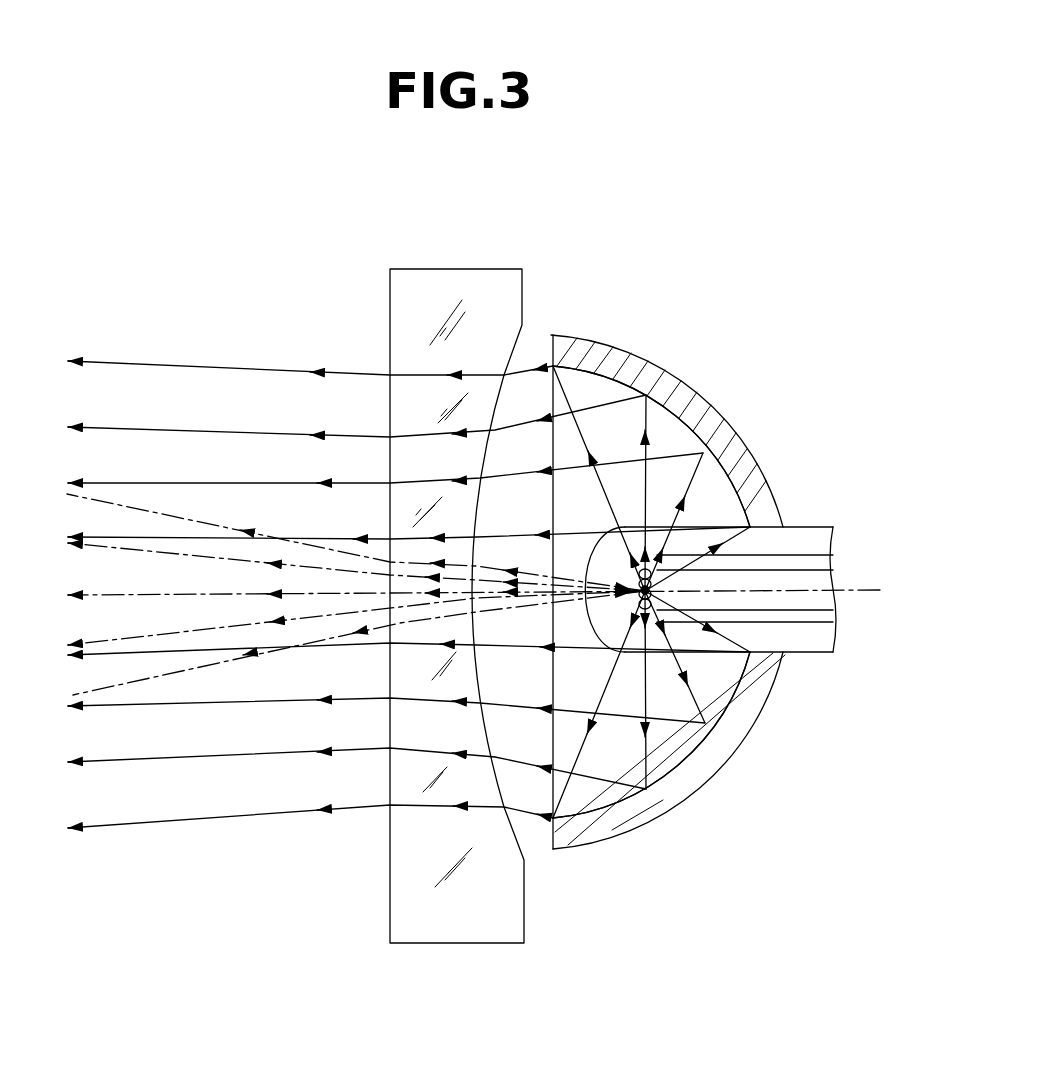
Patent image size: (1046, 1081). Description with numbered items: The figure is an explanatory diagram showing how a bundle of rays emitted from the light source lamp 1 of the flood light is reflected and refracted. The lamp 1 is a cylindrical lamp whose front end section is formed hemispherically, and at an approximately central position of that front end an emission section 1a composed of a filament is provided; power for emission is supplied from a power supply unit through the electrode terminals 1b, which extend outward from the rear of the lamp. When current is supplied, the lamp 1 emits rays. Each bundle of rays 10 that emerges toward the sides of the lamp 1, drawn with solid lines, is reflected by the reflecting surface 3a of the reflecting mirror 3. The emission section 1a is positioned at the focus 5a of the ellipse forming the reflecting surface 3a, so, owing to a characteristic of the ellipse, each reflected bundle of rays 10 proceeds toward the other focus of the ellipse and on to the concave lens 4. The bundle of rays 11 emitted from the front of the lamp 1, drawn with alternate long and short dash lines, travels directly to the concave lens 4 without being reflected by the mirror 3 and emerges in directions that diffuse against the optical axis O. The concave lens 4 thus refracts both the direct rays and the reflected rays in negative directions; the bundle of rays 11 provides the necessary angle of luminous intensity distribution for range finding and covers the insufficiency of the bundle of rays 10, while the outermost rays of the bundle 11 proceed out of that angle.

The light source lamp 1 is at (804, 543).
The emission section 1a is at (618, 655).
The electrode terminals 1b is at (822, 560).
The reflecting mirror 3 is at (637, 374).
The reflecting surface 3a is at (667, 424).
The concave lens 4 is at (452, 290).
The focus 5a is at (648, 595).
The bundle of rays 10 is at (200, 366).
The bundle of rays 11 is at (193, 522).
The optical axis O is at (177, 594).